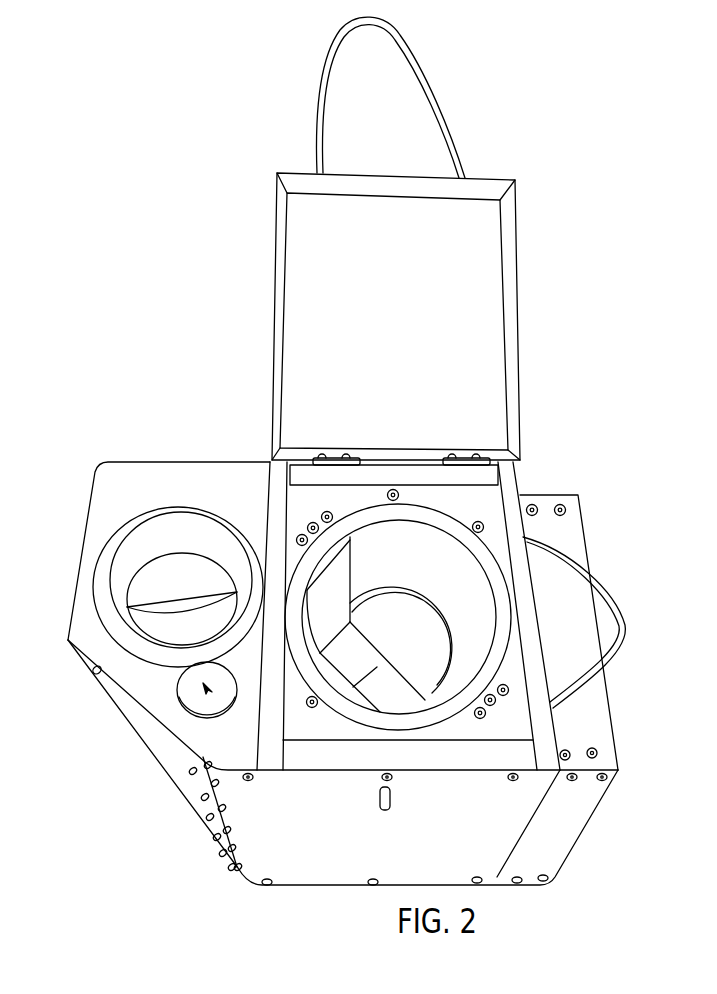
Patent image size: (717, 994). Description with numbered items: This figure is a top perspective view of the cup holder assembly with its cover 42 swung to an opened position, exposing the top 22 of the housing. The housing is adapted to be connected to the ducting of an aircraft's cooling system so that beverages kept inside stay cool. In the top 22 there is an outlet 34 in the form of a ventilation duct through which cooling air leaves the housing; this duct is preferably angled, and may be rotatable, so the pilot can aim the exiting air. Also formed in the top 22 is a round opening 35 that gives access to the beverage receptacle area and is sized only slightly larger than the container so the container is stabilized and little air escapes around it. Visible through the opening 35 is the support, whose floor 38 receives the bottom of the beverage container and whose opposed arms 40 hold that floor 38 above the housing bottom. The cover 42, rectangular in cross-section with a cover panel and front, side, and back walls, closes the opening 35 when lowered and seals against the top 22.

The top 22 is at (141, 500).
The outlet 34 is at (193, 507).
The opening 35 is at (500, 678).
The floor 38 is at (360, 662).
The opposed arms 40 is at (335, 570).
The cover 42 is at (548, 317).